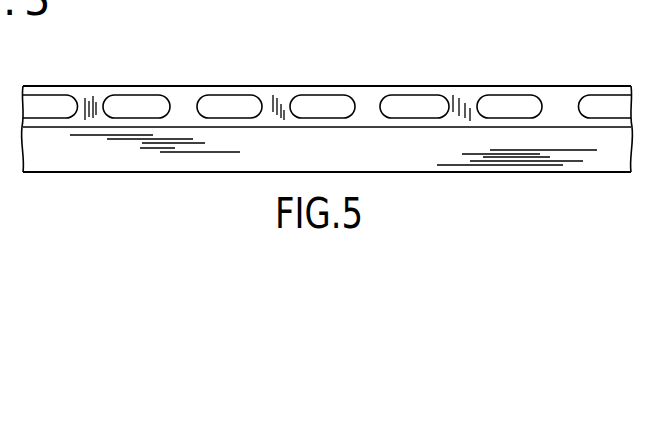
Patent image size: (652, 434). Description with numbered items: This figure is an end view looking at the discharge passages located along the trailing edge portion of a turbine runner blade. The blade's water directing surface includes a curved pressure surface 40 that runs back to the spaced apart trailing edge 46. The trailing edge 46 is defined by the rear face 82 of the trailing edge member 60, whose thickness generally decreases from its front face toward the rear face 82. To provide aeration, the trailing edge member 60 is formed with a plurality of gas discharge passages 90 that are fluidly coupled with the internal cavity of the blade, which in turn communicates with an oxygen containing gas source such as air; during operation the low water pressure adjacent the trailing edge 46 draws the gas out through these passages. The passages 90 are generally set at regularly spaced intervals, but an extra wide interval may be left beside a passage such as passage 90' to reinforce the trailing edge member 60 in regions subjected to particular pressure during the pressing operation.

The pressure surface 40 is at (336, 161).
The trailing edge member 60 is at (362, 86).
The trailing edge 46 is at (547, 92).
The rear face 82 is at (82, 91).
The gas discharge passages 90 is at (322, 72).
The gas discharge passage 90' is at (605, 71).